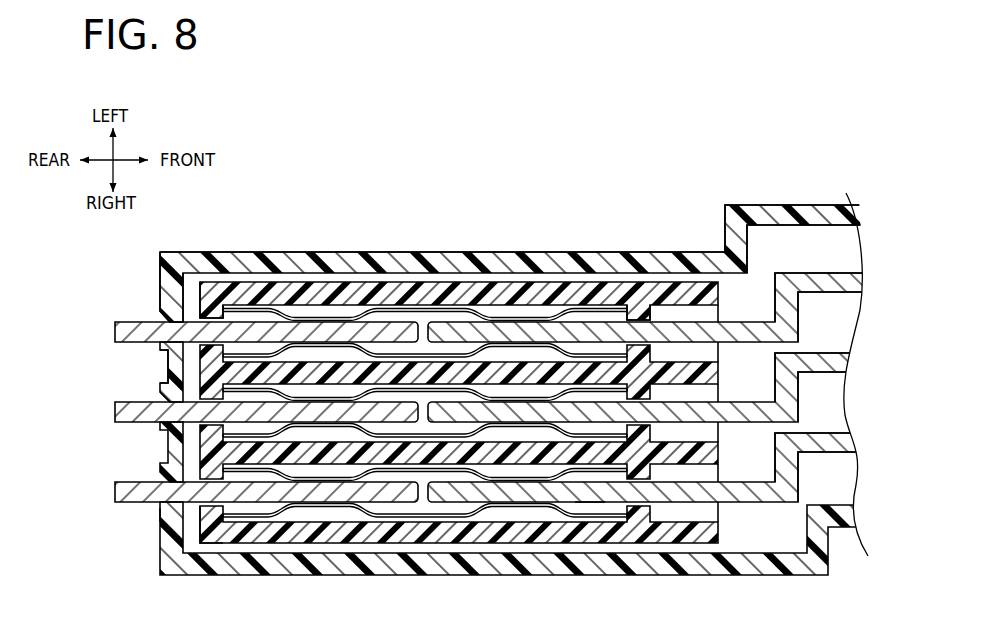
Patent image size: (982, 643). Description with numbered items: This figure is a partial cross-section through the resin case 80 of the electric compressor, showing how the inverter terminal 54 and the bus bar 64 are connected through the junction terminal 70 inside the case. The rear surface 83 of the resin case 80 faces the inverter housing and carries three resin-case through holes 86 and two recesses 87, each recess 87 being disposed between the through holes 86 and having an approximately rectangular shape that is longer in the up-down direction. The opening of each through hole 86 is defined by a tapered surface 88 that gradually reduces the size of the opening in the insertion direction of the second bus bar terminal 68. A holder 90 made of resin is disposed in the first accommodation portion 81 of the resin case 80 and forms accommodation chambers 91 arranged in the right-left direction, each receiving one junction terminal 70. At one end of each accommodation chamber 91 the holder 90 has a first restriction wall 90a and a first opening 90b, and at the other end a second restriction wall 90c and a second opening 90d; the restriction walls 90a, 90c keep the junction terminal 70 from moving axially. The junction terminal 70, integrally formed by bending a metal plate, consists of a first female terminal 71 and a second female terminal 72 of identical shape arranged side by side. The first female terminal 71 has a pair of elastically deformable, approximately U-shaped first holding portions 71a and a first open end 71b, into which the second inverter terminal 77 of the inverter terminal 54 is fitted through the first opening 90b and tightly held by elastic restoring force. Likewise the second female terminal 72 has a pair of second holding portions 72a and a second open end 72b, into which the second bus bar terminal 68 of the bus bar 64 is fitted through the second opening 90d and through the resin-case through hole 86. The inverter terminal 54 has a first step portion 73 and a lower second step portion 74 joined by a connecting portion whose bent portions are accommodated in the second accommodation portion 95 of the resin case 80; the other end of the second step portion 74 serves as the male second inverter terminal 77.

The resin case 80 is at (474, 361).
The first accommodation portion 81 is at (486, 277).
The rear surface 83 is at (160, 285).
The second accommodation portion 95 is at (700, 252).
The tapered surface 88 is at (160, 318).
The resin-case through hole 86 is at (167, 358).
The recess 87 is at (163, 396).
The holder 90 is at (456, 396).
The first restriction wall 90a is at (650, 508).
The first opening 90b is at (648, 483).
The second restriction wall 90c is at (207, 508).
The second opening 90d is at (160, 517).
The second female terminal 72 is at (444, 257).
The second holding portion 72a is at (320, 300).
The second open end 72b is at (214, 300).
The first female terminal 71 is at (425, 250).
The first holding portion 71a is at (523, 320).
The first open end 71b is at (633, 310).
The accommodation chamber 91 is at (425, 396).
The junction terminal 70 is at (489, 517).
The bus bar 64 is at (245, 469).
The second bus bar terminal 68 is at (317, 495).
The first step portion 73 is at (663, 443).
The second inverter terminal 77 is at (519, 490).
The second step portion 74 is at (590, 499).
The inverter terminal 54 is at (818, 300).